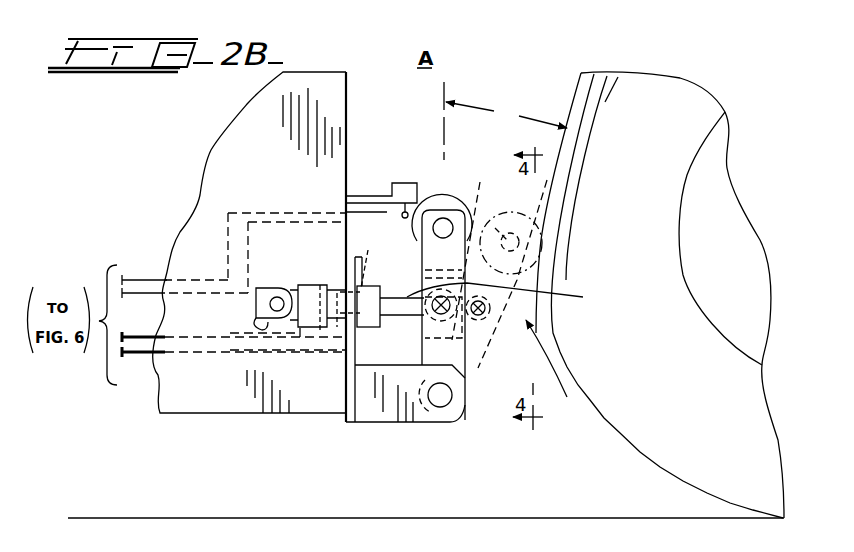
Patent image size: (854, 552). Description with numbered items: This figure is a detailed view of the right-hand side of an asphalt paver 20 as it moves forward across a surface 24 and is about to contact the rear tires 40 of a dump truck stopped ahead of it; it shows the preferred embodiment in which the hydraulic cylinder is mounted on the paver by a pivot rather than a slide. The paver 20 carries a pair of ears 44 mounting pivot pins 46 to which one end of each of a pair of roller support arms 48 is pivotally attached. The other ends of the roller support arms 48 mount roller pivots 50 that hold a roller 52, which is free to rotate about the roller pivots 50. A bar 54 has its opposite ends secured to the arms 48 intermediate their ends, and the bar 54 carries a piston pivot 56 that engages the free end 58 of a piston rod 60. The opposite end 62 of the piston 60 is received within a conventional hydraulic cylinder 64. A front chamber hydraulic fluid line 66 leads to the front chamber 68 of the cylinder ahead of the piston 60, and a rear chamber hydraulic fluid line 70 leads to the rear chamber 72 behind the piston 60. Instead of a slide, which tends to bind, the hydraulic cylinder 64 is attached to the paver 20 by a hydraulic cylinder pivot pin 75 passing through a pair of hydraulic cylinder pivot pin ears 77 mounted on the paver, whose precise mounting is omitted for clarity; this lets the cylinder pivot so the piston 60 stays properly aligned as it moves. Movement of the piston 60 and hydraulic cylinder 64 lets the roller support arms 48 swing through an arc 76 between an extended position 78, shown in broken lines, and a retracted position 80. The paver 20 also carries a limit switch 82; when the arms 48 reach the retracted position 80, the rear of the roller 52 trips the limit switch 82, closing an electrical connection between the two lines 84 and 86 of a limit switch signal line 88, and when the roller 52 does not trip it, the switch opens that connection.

The paver 20 is at (333, 68).
The surface 24 is at (267, 518).
The rear tires 40 is at (641, 450).
The ears 44 is at (400, 423).
The pivot pins 46 is at (444, 400).
The roller support arms 48 is at (484, 340).
The roller pivots 50 is at (451, 230).
The roller 52 is at (451, 199).
The bar 54 is at (432, 338).
The piston pivot 56 is at (438, 311).
The free end 58 is at (508, 297).
The piston rod 60 is at (382, 297).
The opposite end 62 is at (318, 286).
The hydraulic cylinder 64 is at (378, 285).
The front chamber hydraulic fluid line 66 is at (158, 356).
The front chamber 68 is at (368, 257).
The rear chamber hydraulic fluid line 70 is at (158, 337).
The rear chamber 72 is at (318, 306).
The hydraulic cylinder pivot pin 75 is at (272, 290).
The arc 76 is at (506, 111).
The hydraulic cylinder pivot pin ears 77 is at (244, 327).
The extended position 78 is at (582, 428).
The retracted position 80 is at (454, 183).
The limit switch 82 is at (420, 185).
The line 84 is at (150, 280).
The line 86 is at (165, 294).
The limit switch signal line 88 is at (214, 276).